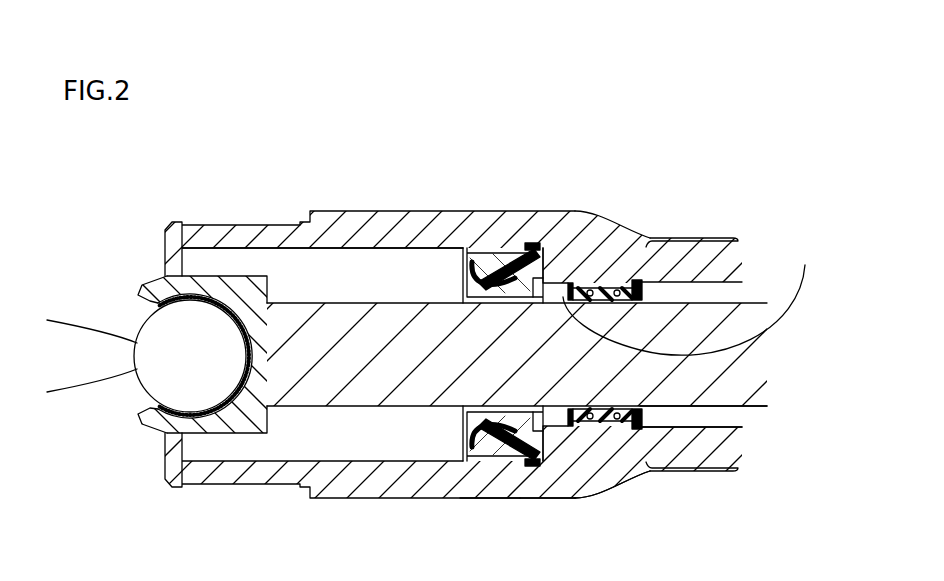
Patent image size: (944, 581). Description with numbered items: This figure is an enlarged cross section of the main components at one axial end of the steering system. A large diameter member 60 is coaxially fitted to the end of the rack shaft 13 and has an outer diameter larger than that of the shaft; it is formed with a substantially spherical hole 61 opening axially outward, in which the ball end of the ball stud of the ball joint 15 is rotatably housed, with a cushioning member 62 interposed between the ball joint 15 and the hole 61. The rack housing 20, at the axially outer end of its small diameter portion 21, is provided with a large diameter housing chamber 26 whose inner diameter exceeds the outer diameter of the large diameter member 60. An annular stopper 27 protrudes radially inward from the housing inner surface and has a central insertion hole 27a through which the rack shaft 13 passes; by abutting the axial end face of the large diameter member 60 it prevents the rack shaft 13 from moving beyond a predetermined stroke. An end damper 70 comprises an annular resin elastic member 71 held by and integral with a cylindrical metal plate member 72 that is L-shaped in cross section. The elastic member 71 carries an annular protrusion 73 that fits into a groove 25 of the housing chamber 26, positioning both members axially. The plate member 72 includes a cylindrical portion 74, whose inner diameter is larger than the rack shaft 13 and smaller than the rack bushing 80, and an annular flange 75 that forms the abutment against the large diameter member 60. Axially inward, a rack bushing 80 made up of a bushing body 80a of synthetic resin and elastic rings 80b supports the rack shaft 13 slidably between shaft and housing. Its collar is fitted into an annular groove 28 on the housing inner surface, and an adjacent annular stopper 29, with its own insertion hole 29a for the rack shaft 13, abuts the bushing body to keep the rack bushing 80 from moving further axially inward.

The rack shaft 13 is at (430, 320).
The ball joint 15 is at (158, 373).
The rack housing 20 is at (595, 233).
The small diameter portion 21 is at (612, 354).
The groove 25 is at (557, 262).
The large diameter housing chamber 26 is at (367, 273).
The stopper 27 is at (565, 278).
The insertion hole 27a is at (698, 297).
The annular groove 28 is at (650, 438).
The stopper 29 is at (653, 415).
The insertion hole 29a is at (665, 388).
The large diameter member 60 is at (235, 290).
The spherical hole 61 is at (140, 323).
The cushioning member 62 is at (195, 433).
The end damper 70 is at (693, 493).
The elastic member 71 is at (538, 499).
The plate member 72 is at (492, 500).
The protrusion 73 is at (640, 468).
The cylindrical portion 74 is at (480, 290).
The flange 75 is at (463, 280).
The rack bushing 80 is at (728, 185).
The bushing body 80a is at (628, 280).
The elastic rings 80b is at (650, 240).